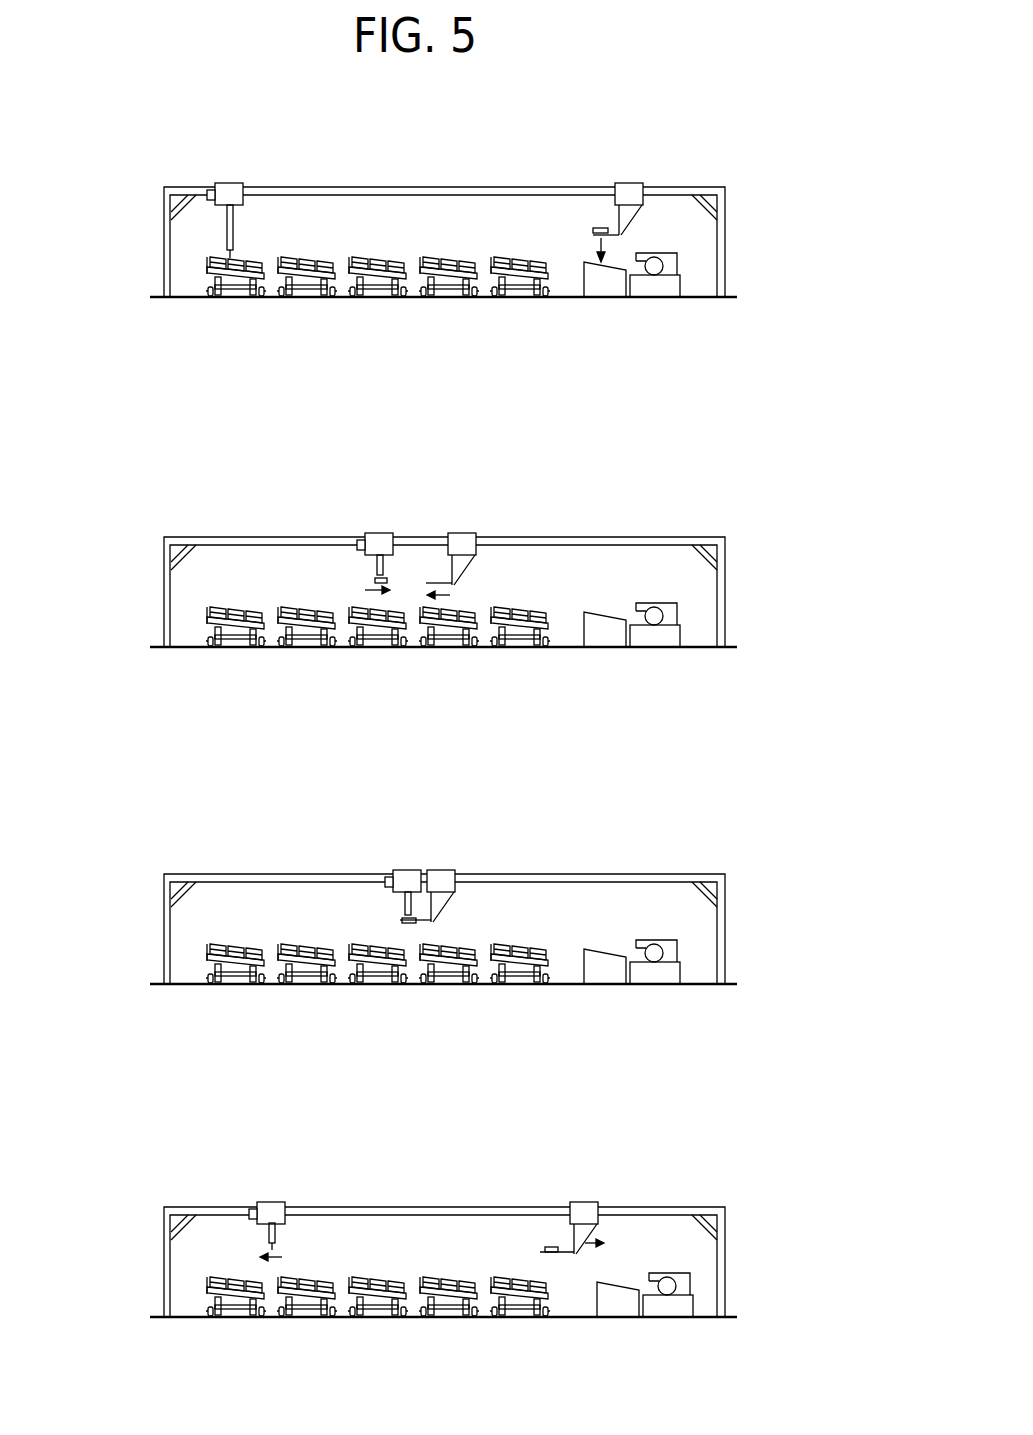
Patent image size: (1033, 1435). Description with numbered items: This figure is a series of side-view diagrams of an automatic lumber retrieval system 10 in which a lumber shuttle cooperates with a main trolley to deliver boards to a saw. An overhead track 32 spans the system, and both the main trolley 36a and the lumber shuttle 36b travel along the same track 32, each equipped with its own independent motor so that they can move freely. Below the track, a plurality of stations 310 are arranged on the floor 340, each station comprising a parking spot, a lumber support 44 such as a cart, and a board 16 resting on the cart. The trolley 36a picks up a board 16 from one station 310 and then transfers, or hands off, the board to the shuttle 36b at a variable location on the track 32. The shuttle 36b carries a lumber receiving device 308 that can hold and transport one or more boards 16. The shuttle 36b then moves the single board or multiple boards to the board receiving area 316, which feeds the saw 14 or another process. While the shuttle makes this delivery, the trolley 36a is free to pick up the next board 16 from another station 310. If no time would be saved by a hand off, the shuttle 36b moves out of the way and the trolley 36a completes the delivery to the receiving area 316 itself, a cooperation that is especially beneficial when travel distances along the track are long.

The robotic manufacturing system 10 is at (773, 110).
The saw 14 is at (660, 252).
The board 16 is at (597, 222).
The track 32 is at (458, 197).
The main trolley 36a is at (238, 207).
The lumber shuttle 36b is at (615, 200).
The lumber support 44 is at (313, 289).
The lumber receiving device 308 is at (566, 1256).
The station 310 is at (192, 273).
The board receiving area 316 is at (605, 283).
The floor 340 is at (187, 642).